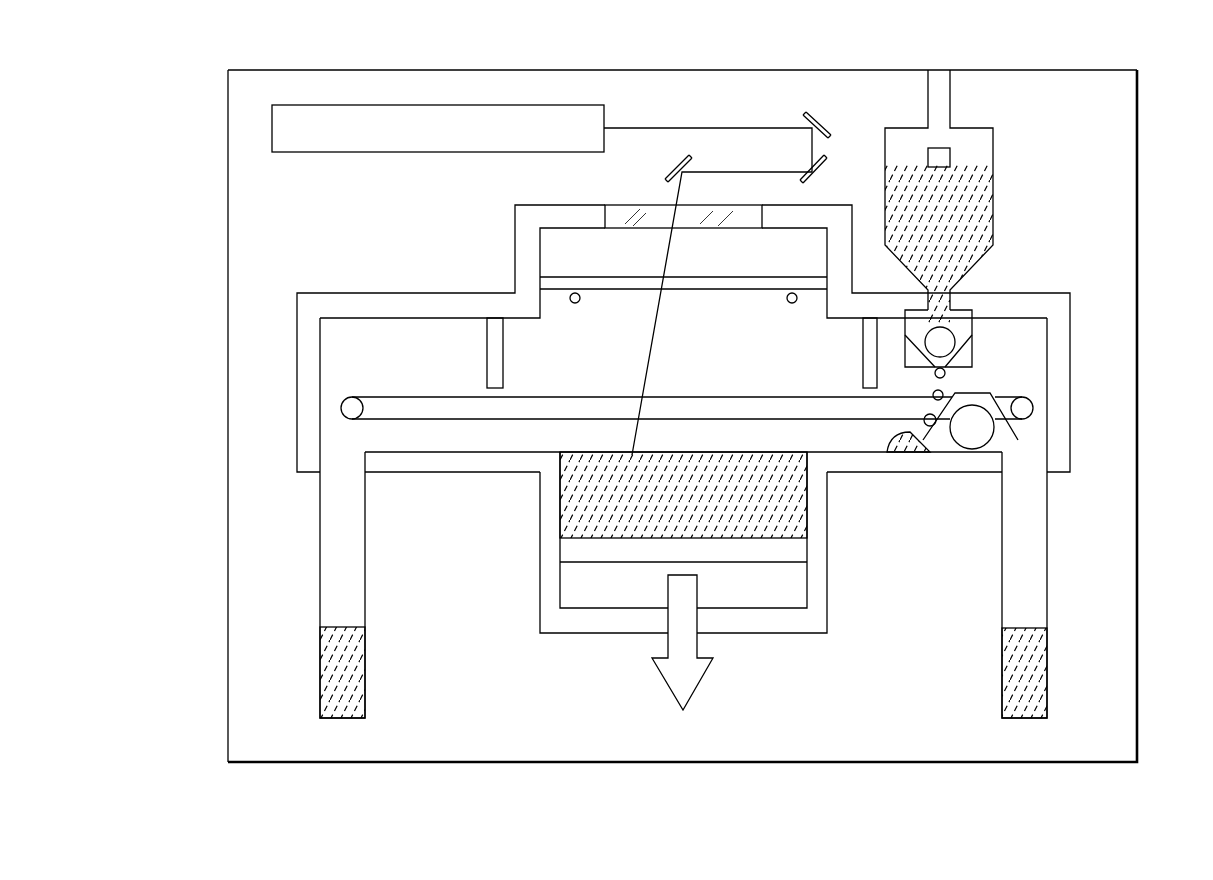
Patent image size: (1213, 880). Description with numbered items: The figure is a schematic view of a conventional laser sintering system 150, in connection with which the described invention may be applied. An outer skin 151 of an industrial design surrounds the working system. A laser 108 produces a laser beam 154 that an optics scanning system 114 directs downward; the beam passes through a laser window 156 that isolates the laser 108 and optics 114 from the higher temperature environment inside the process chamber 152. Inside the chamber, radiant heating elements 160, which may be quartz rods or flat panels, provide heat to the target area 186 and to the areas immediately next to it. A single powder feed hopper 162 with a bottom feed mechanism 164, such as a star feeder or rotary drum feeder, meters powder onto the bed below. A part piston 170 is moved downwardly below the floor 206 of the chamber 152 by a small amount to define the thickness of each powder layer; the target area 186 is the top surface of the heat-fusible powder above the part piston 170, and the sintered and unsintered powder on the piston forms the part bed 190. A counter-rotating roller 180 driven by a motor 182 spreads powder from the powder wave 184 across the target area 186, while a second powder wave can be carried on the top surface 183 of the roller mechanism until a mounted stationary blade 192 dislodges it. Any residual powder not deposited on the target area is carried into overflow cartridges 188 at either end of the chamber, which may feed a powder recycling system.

The laser sintering system 150 is at (193, 122).
The outer skin 151 is at (227, 238).
The laser 108 is at (453, 141).
The optics scanning system 114 is at (752, 104).
The laser window 156 is at (608, 205).
The process chamber 152 is at (297, 372).
The radiant heating elements 160 is at (580, 277).
The laser beam 154 is at (797, 292).
The stationary blade 192 is at (487, 348).
The motor 182 is at (1040, 400).
The top surface of the roller mechanism 183 is at (975, 392).
The roller 180 is at (973, 430).
The powder wave 184 is at (898, 452).
The floor 206 is at (452, 452).
The overflow cartridges 188 is at (320, 518).
The part bed 190 is at (595, 510).
The target area 186 is at (735, 455).
The part piston 170 is at (610, 555).
The powder feed hopper 162 is at (952, 230).
The feed mechanism 164 is at (973, 308).